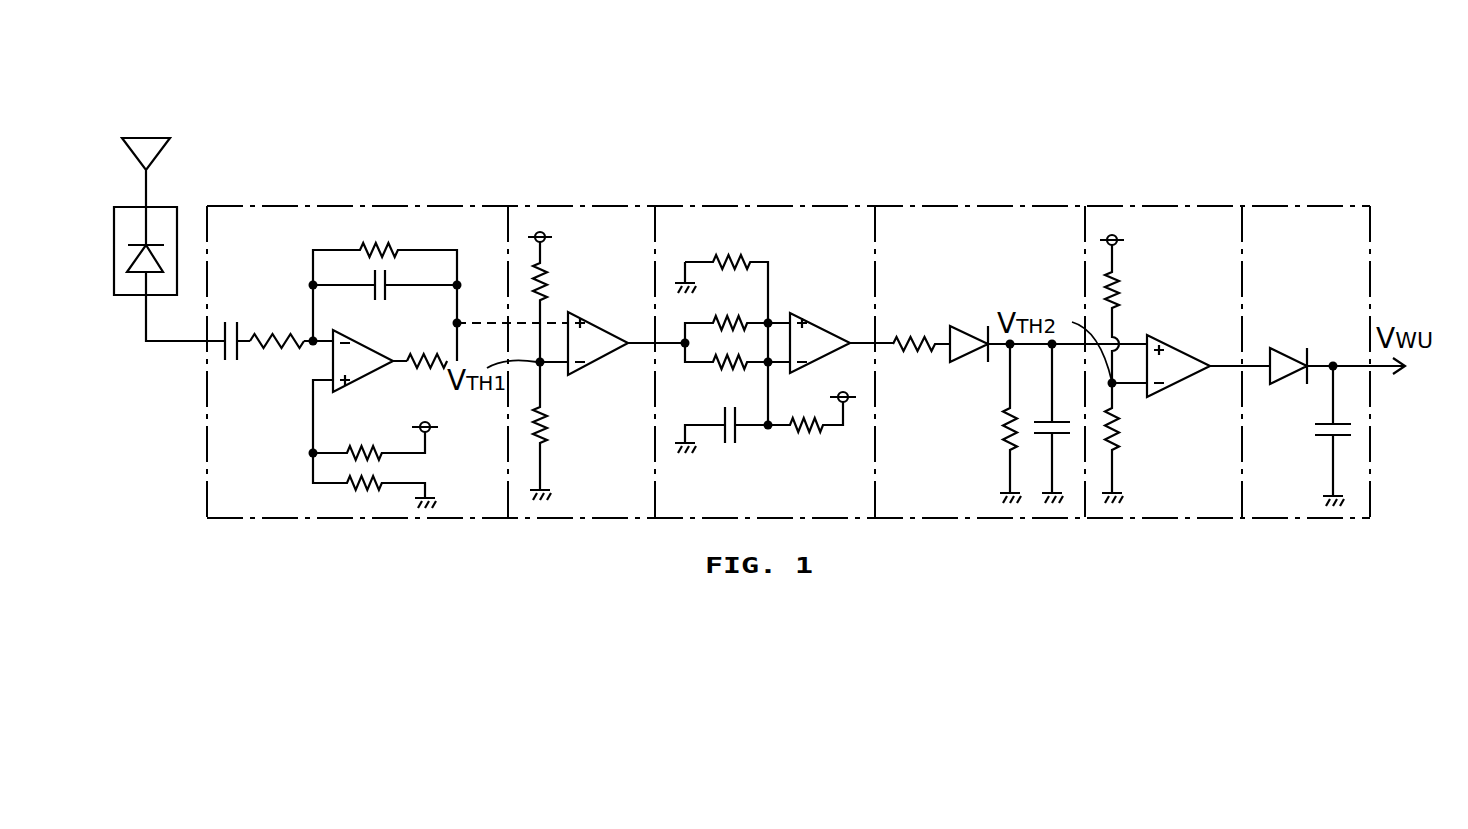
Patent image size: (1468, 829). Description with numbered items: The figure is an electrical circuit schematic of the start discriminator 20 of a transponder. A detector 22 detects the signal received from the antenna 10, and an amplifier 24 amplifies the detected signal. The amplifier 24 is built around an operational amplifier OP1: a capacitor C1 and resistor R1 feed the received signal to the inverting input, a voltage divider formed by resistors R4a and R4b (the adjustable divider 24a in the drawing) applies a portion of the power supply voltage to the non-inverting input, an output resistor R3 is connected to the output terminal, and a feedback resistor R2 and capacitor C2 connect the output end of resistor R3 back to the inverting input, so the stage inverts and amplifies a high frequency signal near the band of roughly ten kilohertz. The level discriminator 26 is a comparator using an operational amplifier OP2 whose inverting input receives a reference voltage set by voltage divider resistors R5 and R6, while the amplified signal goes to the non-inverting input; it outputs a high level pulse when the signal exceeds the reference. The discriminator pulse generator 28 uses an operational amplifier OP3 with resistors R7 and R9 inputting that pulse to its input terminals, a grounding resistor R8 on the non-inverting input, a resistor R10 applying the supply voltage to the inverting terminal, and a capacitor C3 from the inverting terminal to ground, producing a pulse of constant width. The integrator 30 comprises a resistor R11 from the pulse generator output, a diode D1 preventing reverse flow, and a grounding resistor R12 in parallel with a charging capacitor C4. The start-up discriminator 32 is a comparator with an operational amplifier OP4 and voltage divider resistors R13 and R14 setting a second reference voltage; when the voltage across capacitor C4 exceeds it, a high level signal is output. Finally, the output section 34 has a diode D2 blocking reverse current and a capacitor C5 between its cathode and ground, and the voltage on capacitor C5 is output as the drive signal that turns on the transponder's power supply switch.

The start discriminator 20 is at (777, 54).
The antenna 10 is at (155, 135).
The detector 22 is at (125, 297).
The amplifier 24 is at (313, 178).
The variable resistor 24a is at (284, 450).
The level discriminator 26 is at (547, 212).
The discriminator pulse generator 28 is at (738, 185).
The integrator 30 is at (953, 218).
The start-up discriminator 32 is at (1143, 182).
The output section 34 is at (1272, 216).
The capacitor C1 is at (234, 330).
The capacitor C2 is at (385, 294).
The capacitor C3 is at (724, 444).
The charging capacitor C4 is at (1045, 430).
The capacitor C5 is at (1312, 431).
The resistor R1 is at (291, 324).
The feedback resistor R2 is at (385, 287).
The output resistor R3 is at (486, 344).
The resistor R4a is at (403, 436).
The resistor R4b is at (381, 483).
The voltage divider resistor R5 is at (571, 291).
The voltage divider resistor R6 is at (561, 429).
The resistor R7 is at (736, 314).
The grounding resistor R8 is at (729, 273).
The resistor R9 is at (737, 374).
The resistor R10 is at (812, 428).
The resistor R11 is at (921, 324).
The grounding resistor R12 is at (982, 422).
The voltage divider resistor R13 is at (1145, 303).
The voltage divider resistor R14 is at (1143, 441).
The diode D1 is at (1048, 324).
The diode D2 is at (1337, 346).
The operational amplifier OP1 is at (374, 366).
The operational amplifier OP2 is at (593, 348).
The operational amplifier OP3 is at (817, 340).
The operational amplifier OP4 is at (1172, 372).